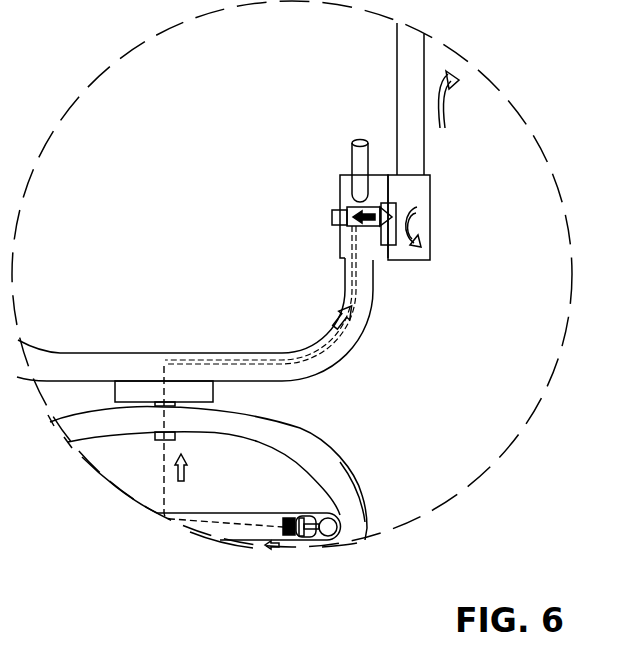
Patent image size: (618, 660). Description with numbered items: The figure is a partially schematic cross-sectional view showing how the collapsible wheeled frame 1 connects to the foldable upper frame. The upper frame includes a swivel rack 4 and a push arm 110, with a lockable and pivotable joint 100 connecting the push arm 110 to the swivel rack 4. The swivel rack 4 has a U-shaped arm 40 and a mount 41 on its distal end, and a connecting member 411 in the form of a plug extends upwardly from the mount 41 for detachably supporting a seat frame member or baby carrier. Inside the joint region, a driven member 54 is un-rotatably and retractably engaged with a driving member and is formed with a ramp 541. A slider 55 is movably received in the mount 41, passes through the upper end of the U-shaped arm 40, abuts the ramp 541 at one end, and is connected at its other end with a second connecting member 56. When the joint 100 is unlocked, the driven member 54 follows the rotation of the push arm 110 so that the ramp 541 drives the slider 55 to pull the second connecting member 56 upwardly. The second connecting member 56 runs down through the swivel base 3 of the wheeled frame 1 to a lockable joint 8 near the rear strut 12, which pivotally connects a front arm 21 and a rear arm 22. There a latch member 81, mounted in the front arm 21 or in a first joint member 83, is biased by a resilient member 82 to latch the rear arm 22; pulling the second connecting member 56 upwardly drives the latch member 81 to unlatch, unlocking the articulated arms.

The collapsible wheeled frame 1 is at (422, 430).
The push arm 110 is at (410, 100).
The mount 41 is at (338, 190).
The joint 100 is at (425, 218).
The connecting member 411 is at (362, 140).
The slider 55 is at (332, 218).
The driven member 54 is at (390, 243).
The ramp 541 is at (392, 204).
The swivel rack 4 is at (355, 328).
The second connecting member 56 is at (250, 358).
The U-shaped arm 40 is at (80, 357).
The swivel base 3 is at (138, 387).
The rear strut 12 is at (65, 440).
The rear arm 22 is at (365, 528).
The lockable joint 8 is at (231, 479).
The front arm 21 is at (277, 548).
The resilient member 82 is at (283, 513).
The first joint member 83 is at (313, 516).
The latch member 81 is at (317, 543).